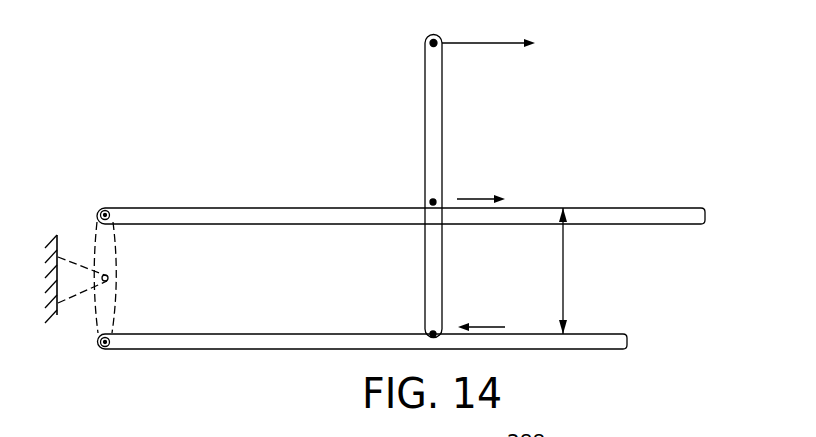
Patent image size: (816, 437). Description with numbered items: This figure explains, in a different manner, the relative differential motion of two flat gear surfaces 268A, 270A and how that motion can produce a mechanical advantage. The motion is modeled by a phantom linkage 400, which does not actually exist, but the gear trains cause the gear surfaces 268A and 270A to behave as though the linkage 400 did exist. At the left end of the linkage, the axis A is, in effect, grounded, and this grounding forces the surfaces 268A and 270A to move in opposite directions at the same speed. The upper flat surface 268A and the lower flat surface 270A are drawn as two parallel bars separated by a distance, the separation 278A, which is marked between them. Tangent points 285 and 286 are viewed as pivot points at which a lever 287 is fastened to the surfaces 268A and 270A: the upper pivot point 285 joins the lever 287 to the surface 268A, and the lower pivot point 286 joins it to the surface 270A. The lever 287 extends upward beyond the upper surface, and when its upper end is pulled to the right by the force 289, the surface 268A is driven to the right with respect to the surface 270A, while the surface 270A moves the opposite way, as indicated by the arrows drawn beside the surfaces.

The phantom linkage 400 is at (92, 196).
The axis A is at (108, 278).
The gear surface 268A is at (263, 207).
The gear surface 270A is at (232, 333).
The lever 287 is at (443, 248).
The force 289 is at (500, 43).
The tangent point 285 is at (435, 200).
The tangent point 286 is at (435, 332).
The separation 278A is at (564, 268).